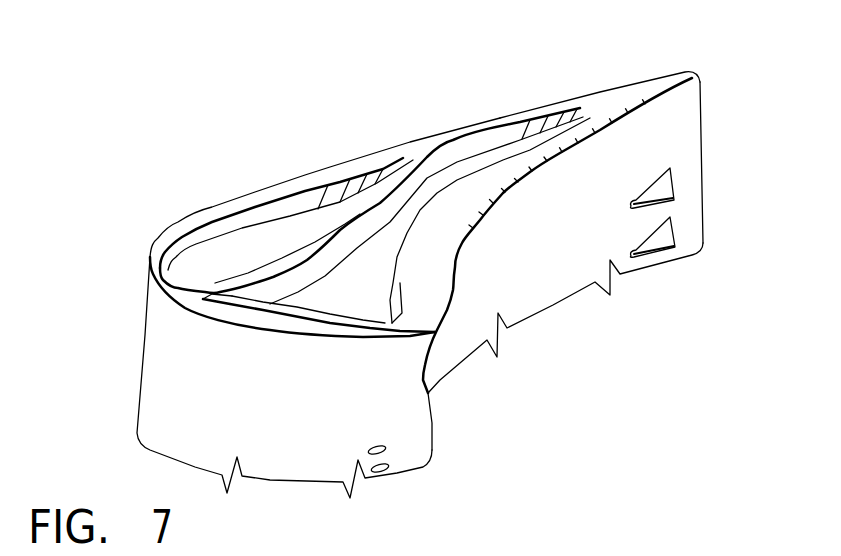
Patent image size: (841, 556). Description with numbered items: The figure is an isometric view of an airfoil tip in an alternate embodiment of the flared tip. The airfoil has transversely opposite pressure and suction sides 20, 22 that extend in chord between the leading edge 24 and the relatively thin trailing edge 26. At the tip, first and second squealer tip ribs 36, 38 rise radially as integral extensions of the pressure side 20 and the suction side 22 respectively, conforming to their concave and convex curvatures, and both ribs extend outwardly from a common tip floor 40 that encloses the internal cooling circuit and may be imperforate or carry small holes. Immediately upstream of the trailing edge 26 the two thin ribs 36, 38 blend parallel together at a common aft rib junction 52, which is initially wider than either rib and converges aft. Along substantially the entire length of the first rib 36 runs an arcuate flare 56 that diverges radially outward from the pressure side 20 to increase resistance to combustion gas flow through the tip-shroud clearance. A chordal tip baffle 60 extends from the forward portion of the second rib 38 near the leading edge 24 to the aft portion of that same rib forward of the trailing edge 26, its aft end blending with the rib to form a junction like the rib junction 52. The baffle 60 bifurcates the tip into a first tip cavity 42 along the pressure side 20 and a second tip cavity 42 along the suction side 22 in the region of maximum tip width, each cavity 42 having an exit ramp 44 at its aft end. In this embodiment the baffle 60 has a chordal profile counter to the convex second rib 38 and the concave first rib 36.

The pressure side 20 is at (494, 276).
The suction side 22 is at (170, 413).
The leading edge 24 is at (430, 418).
The trailing edge 26 is at (703, 135).
The first squealer tip rib 36 is at (463, 205).
The second squealer tip rib 38 is at (330, 167).
The tip floor 40 is at (220, 268).
The tip cavity 42 is at (192, 273).
The exit ramp 44 is at (525, 118).
The rib junction 52 is at (615, 100).
The arcuate flare 56 is at (557, 158).
The tip baffle 60 is at (287, 257).